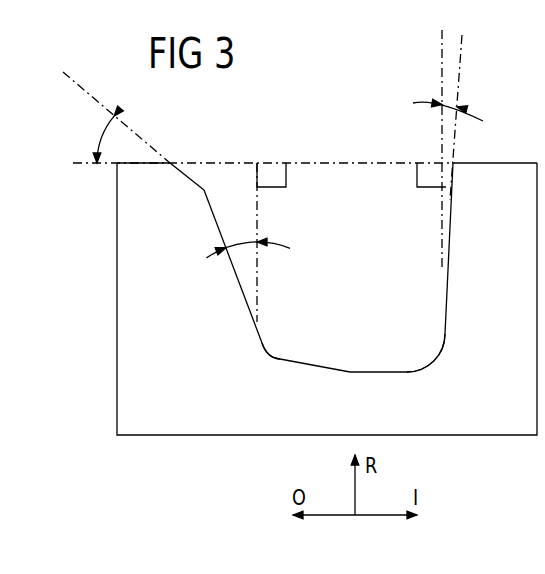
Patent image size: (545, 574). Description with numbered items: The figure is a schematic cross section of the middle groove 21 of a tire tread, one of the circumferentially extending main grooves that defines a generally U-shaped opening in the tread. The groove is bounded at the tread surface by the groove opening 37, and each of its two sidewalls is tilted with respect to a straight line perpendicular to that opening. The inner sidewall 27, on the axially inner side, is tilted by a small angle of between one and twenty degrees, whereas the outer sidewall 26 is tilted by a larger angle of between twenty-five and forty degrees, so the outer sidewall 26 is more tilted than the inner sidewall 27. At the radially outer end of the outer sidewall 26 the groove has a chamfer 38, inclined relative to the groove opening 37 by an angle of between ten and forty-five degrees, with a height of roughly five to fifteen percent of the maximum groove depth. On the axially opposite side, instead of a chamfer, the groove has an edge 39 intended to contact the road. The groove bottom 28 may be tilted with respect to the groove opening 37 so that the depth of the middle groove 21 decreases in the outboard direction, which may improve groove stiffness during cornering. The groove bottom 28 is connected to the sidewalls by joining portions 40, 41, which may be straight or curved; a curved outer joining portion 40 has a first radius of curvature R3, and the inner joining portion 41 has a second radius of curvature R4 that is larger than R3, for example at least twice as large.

The middle groove 21 is at (307, 127).
The outer sidewall 26 is at (202, 290).
The inner sidewall 27 is at (484, 260).
The groove bottom 28 is at (343, 402).
The groove opening 37 is at (354, 198).
The chamfer 38 is at (176, 212).
The edge 39 is at (476, 188).
The outer joining portion 40 is at (237, 370).
The inner joining portion 41 is at (455, 372).
The first radius of curvature R3 is at (288, 343).
The second radius of curvature R4 is at (420, 358).